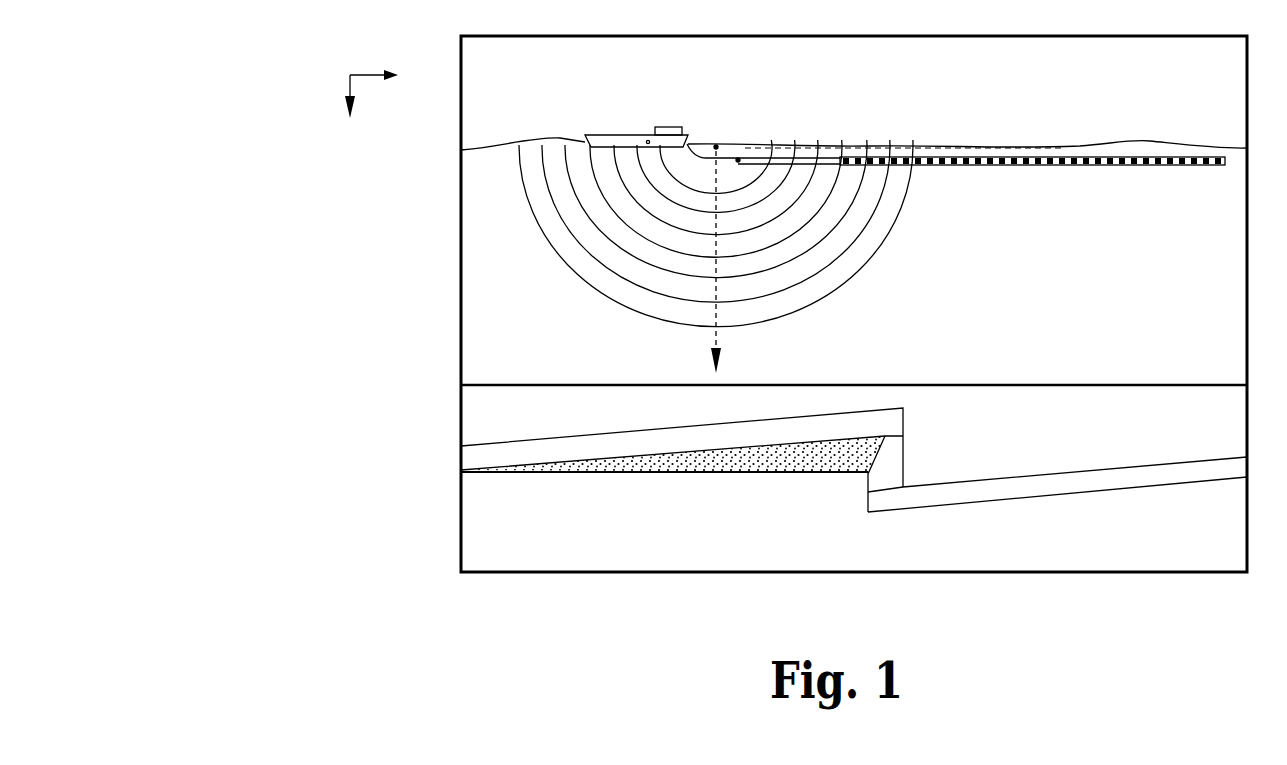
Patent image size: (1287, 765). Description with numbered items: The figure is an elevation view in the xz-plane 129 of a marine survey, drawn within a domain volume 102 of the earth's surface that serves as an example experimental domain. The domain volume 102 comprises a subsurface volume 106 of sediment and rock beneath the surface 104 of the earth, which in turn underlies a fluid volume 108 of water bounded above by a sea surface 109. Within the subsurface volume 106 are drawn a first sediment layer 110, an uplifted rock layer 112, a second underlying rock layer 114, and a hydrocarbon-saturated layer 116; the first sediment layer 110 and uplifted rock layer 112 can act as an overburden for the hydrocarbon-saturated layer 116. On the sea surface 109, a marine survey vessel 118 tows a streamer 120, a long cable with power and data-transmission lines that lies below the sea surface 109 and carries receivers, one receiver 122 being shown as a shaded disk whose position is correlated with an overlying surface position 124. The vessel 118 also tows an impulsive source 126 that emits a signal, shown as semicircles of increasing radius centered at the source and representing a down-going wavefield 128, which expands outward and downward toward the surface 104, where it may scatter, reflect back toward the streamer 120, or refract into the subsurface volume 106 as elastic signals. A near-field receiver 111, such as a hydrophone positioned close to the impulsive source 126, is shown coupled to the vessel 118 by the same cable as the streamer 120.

The domain volume 102 is at (362, 207).
The surface of the earth 104 is at (517, 384).
The subsurface volume 106 is at (480, 405).
The fluid volume 108 is at (480, 292).
The sea surface 109 is at (988, 144).
The first sediment layer 110 is at (1110, 445).
The near-field receiver 111 is at (740, 159).
The uplifted rock layer 112 is at (480, 467).
The second underlying rock layer 114 is at (585, 556).
The hydrocarbon-saturated layer 116 is at (683, 474).
The marine survey vessel 118 is at (630, 134).
The streamer 120 is at (1038, 198).
The receiver 122 is at (1152, 166).
The surface position 124 is at (1152, 141).
The impulsive source 126 is at (716, 146).
The down-going wavefield 128 is at (880, 249).
The xz-plane 129 is at (350, 75).